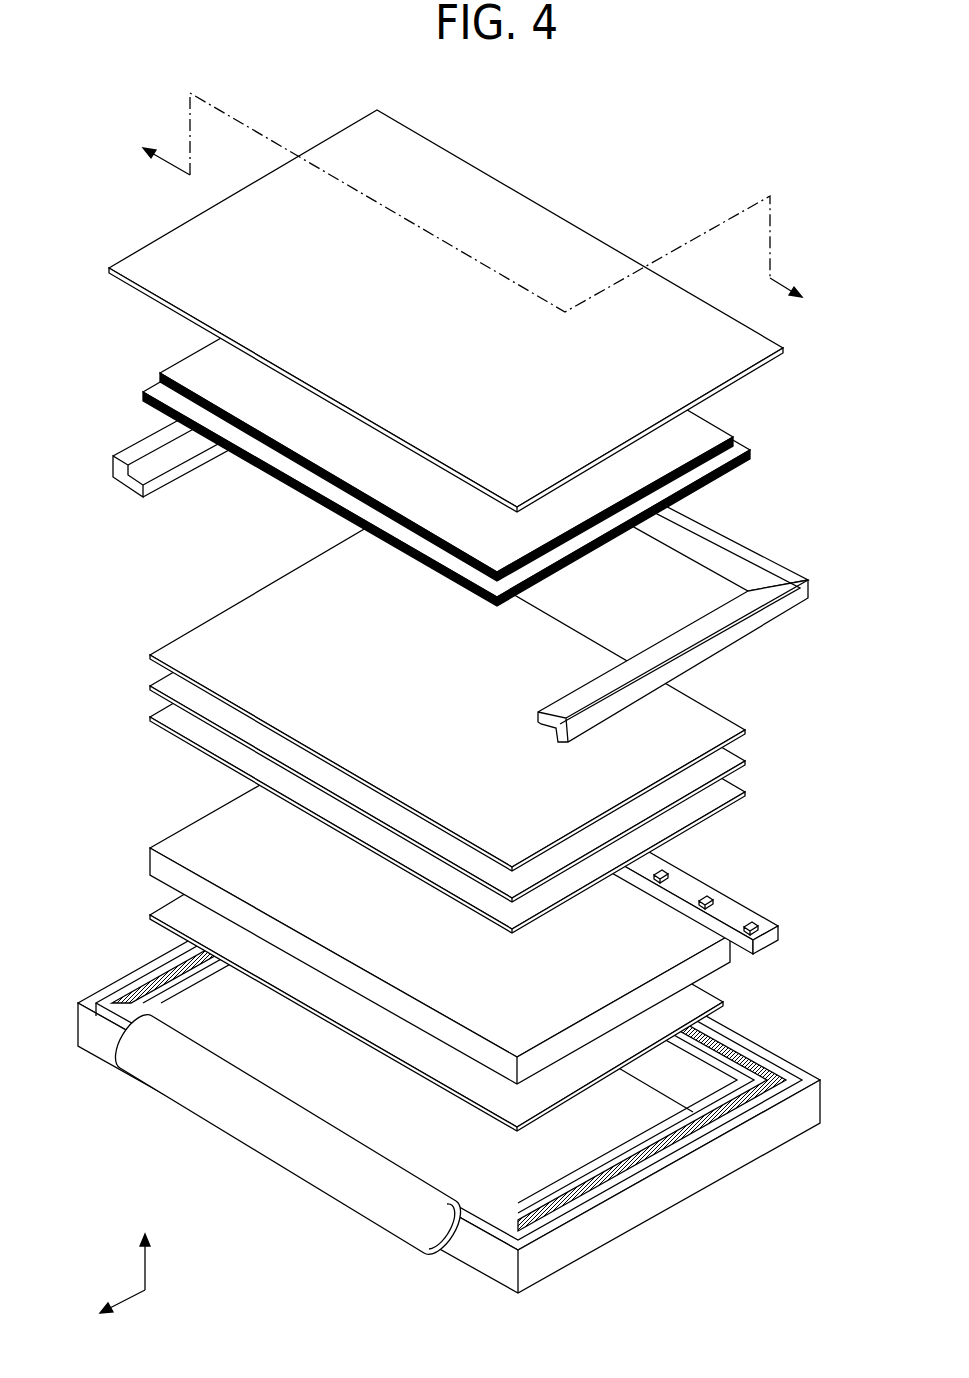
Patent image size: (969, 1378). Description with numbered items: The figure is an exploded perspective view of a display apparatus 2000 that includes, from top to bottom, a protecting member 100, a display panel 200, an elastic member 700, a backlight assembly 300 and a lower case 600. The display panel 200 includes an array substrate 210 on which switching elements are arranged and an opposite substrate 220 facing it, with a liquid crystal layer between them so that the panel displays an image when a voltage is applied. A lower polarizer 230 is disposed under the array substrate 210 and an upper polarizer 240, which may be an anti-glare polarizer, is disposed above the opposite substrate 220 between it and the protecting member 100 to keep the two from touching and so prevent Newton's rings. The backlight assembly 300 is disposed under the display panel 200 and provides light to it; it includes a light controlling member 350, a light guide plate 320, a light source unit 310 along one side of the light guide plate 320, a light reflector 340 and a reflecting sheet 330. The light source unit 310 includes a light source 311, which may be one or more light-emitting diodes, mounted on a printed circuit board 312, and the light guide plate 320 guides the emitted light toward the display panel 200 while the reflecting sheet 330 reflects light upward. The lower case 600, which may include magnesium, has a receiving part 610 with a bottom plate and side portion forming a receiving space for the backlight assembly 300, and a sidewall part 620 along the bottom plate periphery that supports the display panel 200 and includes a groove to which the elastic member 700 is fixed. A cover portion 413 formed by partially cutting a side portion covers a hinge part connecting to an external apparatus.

The display apparatus 2000 is at (503, 140).
The protecting member 100 is at (783, 349).
The display panel 200 is at (509, 422).
The array substrate 210 is at (483, 425).
The opposite substrate 220 is at (491, 409).
The lower polarizer 230 is at (735, 463).
The upper polarizer 240 is at (700, 413).
The elastic member 700 is at (737, 633).
The backlight assembly 300 is at (526, 824).
The light controlling member 350 is at (501, 725).
The light guide plate 320 is at (617, 884).
The light source unit 310 is at (729, 897).
The light source 311 is at (667, 880).
The printed circuit board 312 is at (732, 927).
The light reflector 340 is at (778, 928).
The reflecting sheet 330 is at (717, 988).
The lower case 600 is at (449, 1063).
The receiving part 610 is at (688, 1170).
The sidewall part 620 is at (648, 1172).
The cover portion 413 is at (348, 1190).